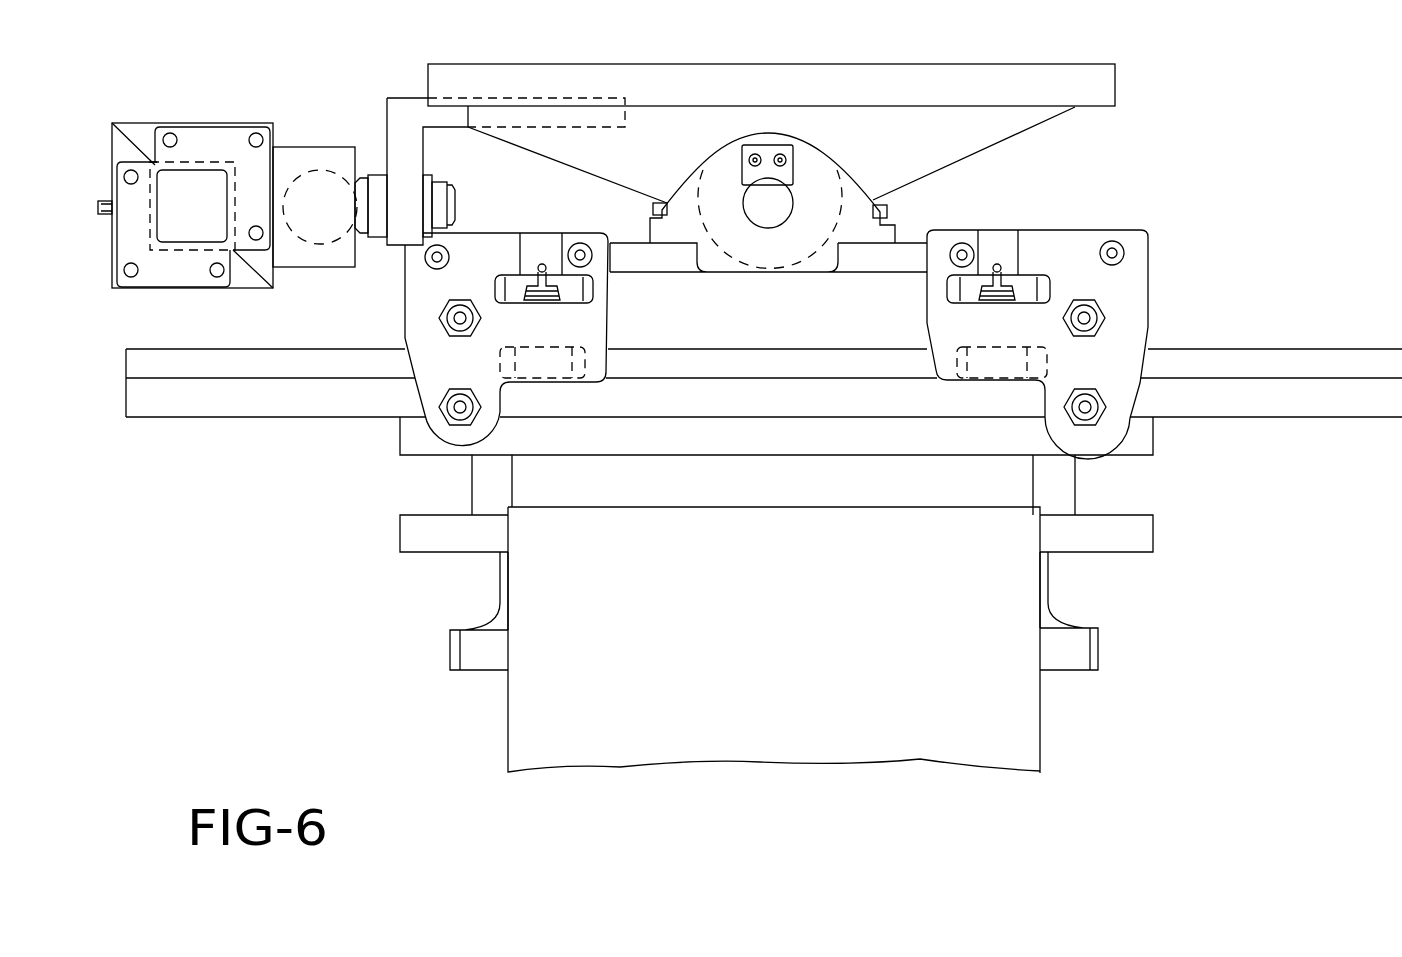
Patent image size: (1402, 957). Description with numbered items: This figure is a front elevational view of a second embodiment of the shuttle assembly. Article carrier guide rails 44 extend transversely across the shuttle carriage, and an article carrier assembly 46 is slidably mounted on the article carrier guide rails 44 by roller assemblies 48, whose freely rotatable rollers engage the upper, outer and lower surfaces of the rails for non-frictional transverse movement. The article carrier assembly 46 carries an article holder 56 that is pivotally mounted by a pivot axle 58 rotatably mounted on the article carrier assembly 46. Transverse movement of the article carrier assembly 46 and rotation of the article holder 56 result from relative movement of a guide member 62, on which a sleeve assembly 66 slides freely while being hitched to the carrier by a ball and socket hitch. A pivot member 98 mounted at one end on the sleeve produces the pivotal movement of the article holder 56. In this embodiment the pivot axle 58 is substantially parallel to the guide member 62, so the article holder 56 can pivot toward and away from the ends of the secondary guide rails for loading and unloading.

The article carrier guide rails 44 is at (1252, 349).
The article carrier assembly 46 is at (1228, 77).
The roller assemblies 48 is at (1149, 240).
The article holder 56 is at (745, 67).
The pivot axle 58 is at (768, 217).
The guide member 62 is at (197, 187).
The sleeve assembly 66 is at (226, 118).
The pivot member 98 is at (402, 148).